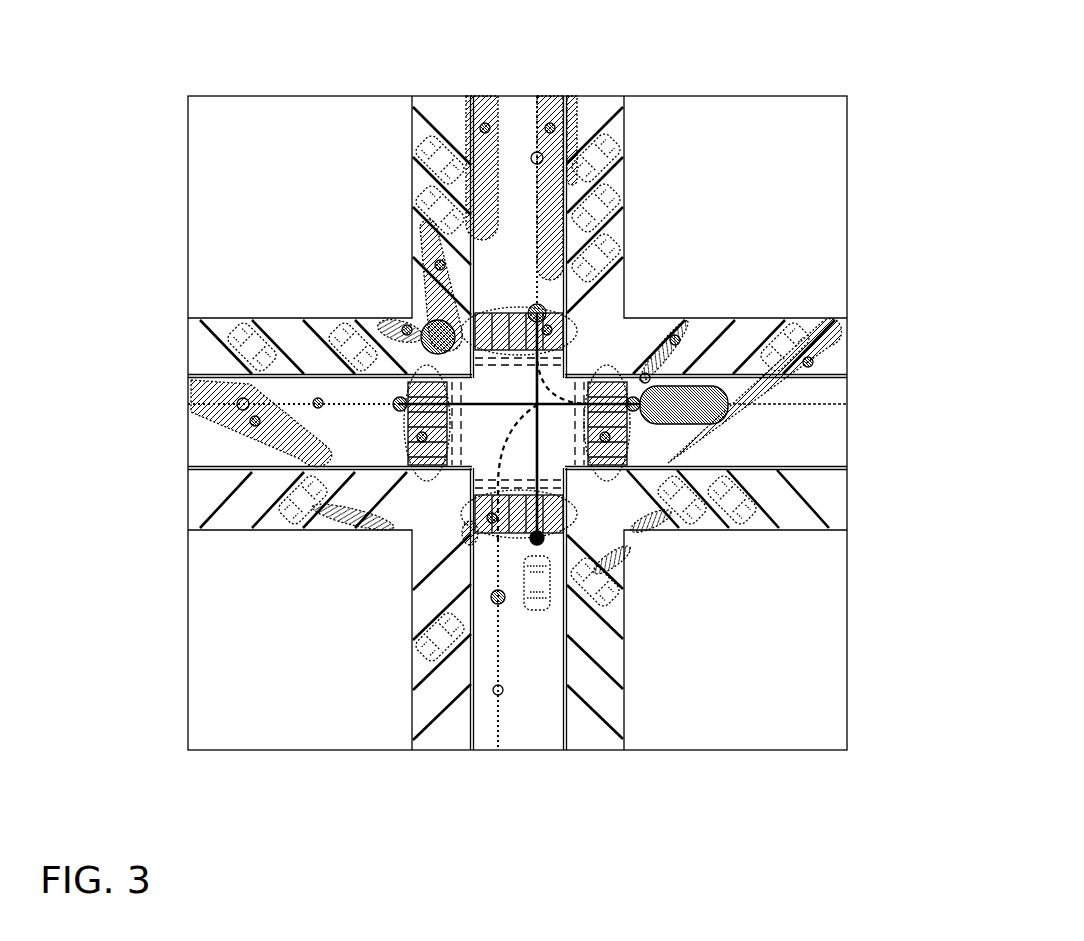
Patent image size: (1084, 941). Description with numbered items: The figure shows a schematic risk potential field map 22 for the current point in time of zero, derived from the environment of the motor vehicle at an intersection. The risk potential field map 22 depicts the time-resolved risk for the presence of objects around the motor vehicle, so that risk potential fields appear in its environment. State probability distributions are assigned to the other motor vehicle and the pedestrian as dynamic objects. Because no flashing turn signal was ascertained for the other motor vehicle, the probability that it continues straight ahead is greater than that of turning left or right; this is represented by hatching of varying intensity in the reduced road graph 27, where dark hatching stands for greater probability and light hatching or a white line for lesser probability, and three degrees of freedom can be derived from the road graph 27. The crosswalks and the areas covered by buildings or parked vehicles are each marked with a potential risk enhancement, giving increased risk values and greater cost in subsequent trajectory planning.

The risk potential field map 22 is at (178, 84).
The reduced road graph 27 is at (318, 403).